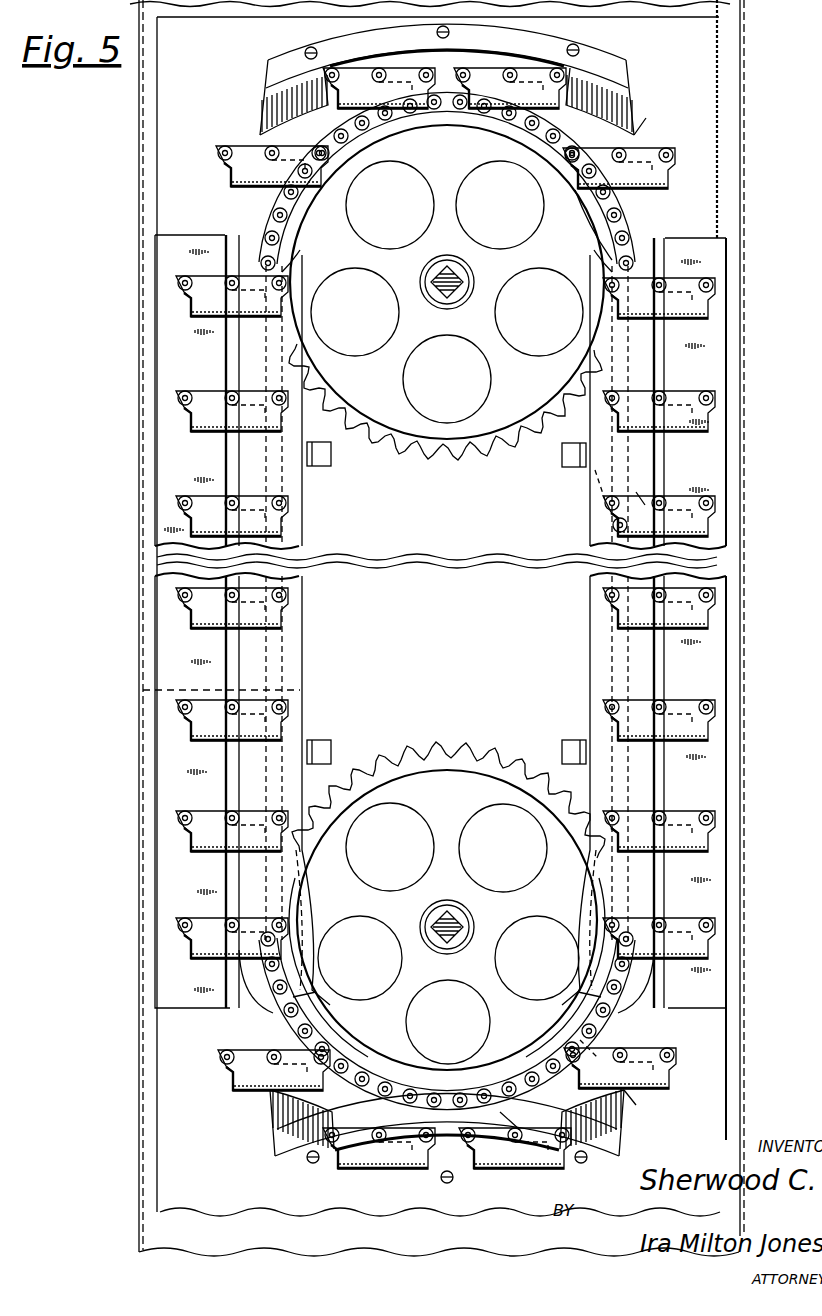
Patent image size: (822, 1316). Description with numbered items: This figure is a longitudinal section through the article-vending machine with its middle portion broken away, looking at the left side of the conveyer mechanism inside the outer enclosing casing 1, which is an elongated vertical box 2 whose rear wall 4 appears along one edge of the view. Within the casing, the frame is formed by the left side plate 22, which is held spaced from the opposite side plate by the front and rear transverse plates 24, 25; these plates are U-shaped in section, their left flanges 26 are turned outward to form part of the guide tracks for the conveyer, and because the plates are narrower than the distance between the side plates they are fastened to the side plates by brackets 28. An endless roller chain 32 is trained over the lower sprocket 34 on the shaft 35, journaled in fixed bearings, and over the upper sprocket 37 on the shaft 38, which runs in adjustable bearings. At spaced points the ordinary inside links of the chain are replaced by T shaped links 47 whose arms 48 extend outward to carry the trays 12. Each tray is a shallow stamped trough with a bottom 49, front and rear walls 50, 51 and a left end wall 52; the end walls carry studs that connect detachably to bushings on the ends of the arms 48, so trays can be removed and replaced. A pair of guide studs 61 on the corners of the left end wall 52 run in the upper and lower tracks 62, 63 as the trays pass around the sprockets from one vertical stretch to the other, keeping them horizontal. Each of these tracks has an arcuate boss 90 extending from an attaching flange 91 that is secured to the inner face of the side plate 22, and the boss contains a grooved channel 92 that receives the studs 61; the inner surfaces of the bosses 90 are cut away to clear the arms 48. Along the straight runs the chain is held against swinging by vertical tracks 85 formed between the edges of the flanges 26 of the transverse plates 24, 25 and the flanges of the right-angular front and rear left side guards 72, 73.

The outer enclosing casing 1 is at (744, 354).
The elongated vertical box 2 is at (744, 787).
The rear wall 4 is at (744, 434).
The tray 12 is at (655, 178).
The left side plate 22 is at (690, 130).
The front transverse plate 24 is at (300, 634).
The rear transverse plate 25 is at (592, 668).
The left flange 26 is at (258, 672).
The bracket 28 is at (325, 464).
The endless chain 32 is at (622, 242).
The lower sprocket 34 is at (441, 800).
The shaft 35 is at (440, 927).
The upper sprocket 37 is at (476, 166).
The shaft 38 is at (478, 270).
The T shaped link 47 is at (612, 489).
The arm 48 is at (640, 495).
The bottom 49 is at (222, 292).
The front wall 50 is at (568, 170).
The rear wall 51 is at (665, 182).
The left end wall 52 is at (200, 292).
The guide stud 61 is at (143, 690).
The upper track 62 is at (265, 75).
The lower track 63 is at (268, 1140).
The front left side guard 72 is at (177, 658).
The rear left side guard 73 is at (700, 688).
The vertical track 85 is at (237, 360).
The arcuate boss 90 is at (618, 112).
The attaching flange 91 is at (598, 62).
The grooved channel 92 is at (270, 108).